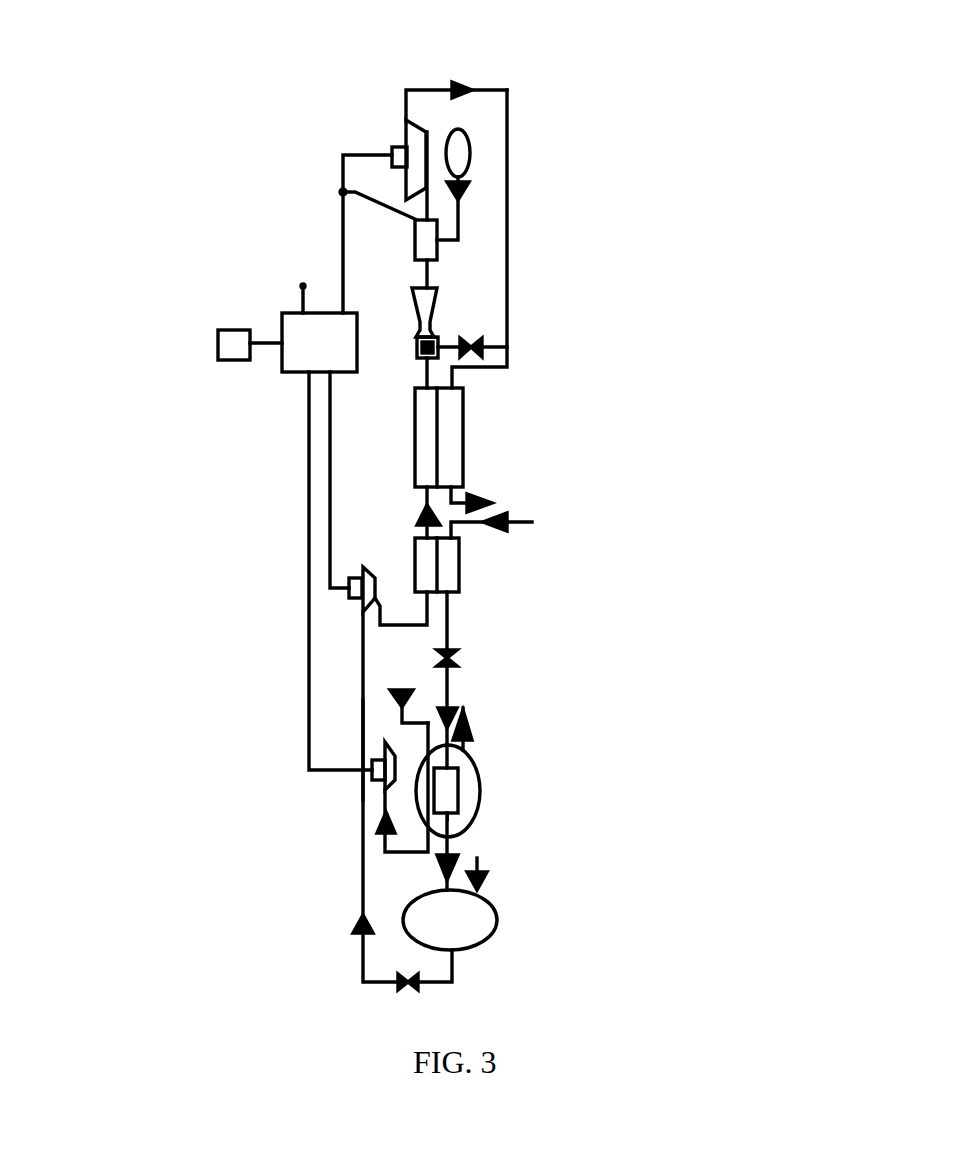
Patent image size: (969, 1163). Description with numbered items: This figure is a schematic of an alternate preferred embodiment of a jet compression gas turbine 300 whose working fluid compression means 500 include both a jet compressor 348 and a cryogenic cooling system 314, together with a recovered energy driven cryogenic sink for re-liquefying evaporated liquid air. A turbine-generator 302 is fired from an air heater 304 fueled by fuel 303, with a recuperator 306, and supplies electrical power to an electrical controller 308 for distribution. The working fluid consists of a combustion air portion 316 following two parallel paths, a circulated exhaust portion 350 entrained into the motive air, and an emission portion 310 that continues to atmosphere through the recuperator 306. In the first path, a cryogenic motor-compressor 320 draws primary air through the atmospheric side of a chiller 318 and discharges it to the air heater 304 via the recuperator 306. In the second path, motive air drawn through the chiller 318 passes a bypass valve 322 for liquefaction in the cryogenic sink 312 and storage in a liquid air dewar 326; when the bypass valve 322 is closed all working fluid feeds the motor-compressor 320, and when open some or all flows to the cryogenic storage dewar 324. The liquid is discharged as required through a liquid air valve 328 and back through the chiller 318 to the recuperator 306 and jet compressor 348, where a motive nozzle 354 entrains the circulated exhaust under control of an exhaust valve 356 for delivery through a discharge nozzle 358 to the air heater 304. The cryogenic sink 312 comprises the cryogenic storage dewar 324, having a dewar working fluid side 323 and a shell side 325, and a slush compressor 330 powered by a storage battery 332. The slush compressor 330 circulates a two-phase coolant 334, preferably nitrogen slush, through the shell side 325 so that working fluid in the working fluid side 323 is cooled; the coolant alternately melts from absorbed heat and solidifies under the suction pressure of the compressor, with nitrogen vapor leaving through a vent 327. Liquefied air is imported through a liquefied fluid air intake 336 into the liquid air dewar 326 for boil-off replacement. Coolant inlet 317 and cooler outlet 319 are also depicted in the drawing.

The gas turbine 300 is at (466, 89).
The turbine-generator 302 is at (412, 138).
The fuel 303 is at (455, 193).
The air heater 304 is at (343, 192).
The recuperator 306 is at (436, 418).
The electrical controller 308 is at (235, 345).
The emission portion 310 is at (492, 503).
The cryogenic sink 312 is at (392, 834).
The cryogenic cooling system 314 is at (378, 678).
The combustion air portion 316 is at (453, 552).
The coolant inlet 317 is at (532, 522).
The chiller 318 is at (437, 578).
The cooler outlet 319 is at (461, 585).
The motor-compressor 320 is at (358, 578).
The bypass valve 322 is at (453, 663).
The dewar working fluid side 323 is at (448, 793).
The cryogenic storage dewar 324 is at (468, 778).
The shell side 325 is at (462, 817).
The liquid air dewar 326 is at (465, 925).
The vent 327 is at (470, 730).
The liquid air valve 328 is at (402, 987).
The slush compressor 330 is at (385, 757).
The storage battery 332 is at (302, 330).
The coolant 334 is at (410, 700).
The liquefied fluid air intake 336 is at (480, 870).
The jet compressor 348 is at (433, 285).
The circulated exhaust portion 350 is at (510, 342).
The motive nozzle 354 is at (419, 358).
The exhaust valve 356 is at (478, 340).
The discharge nozzle 358 is at (414, 286).
The working fluid compression means 500 is at (280, 875).